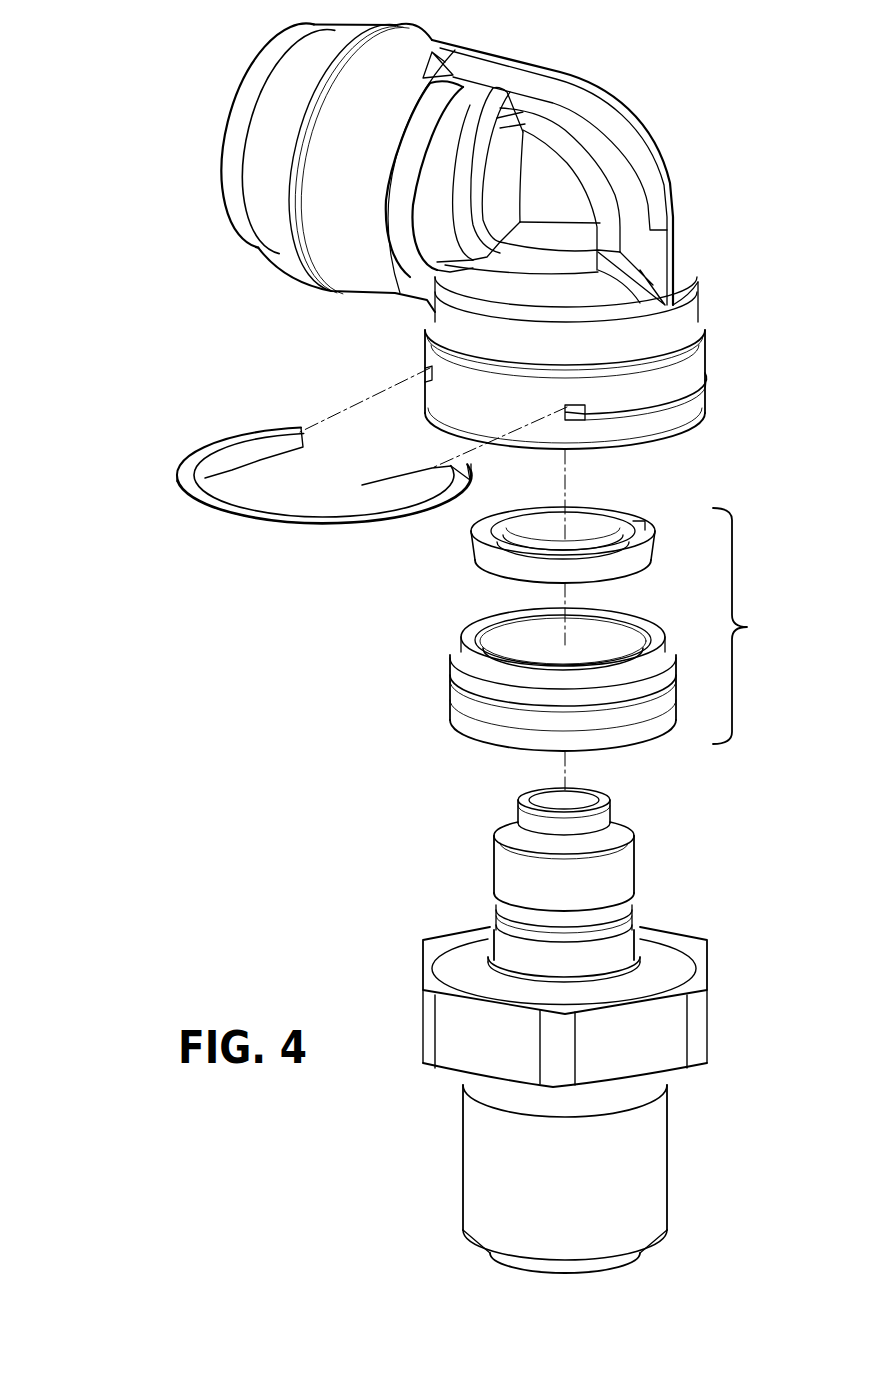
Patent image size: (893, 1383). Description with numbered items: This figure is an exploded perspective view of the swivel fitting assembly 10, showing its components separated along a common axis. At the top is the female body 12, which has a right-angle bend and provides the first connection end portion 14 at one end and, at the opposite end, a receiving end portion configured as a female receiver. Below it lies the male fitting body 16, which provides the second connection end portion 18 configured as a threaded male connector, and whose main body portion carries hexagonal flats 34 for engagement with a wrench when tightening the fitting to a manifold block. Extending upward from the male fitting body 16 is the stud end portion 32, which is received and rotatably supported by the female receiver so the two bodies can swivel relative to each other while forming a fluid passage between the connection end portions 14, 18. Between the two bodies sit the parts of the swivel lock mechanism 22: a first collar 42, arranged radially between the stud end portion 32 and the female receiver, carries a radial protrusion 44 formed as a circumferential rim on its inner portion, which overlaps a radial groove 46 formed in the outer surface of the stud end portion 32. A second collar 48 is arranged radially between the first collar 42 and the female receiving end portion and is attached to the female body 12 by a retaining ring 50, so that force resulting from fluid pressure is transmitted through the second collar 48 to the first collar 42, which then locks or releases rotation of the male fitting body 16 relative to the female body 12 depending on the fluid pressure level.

The swivel fitting assembly 10 is at (132, 48).
The female body 12 is at (672, 134).
The first connection end portion 14 is at (214, 149).
The male fitting body 16 is at (596, 1104).
The second connection end portion 18 is at (504, 1275).
The swivel lock mechanism 22 is at (747, 626).
The stud end portion 32 is at (586, 885).
The flats 34 is at (648, 1046).
The collar 42 is at (543, 535).
The radial protrusion 44 is at (590, 530).
The radial groove 46 is at (508, 912).
The second collar 48 is at (452, 682).
The retaining ring 50 is at (198, 460).